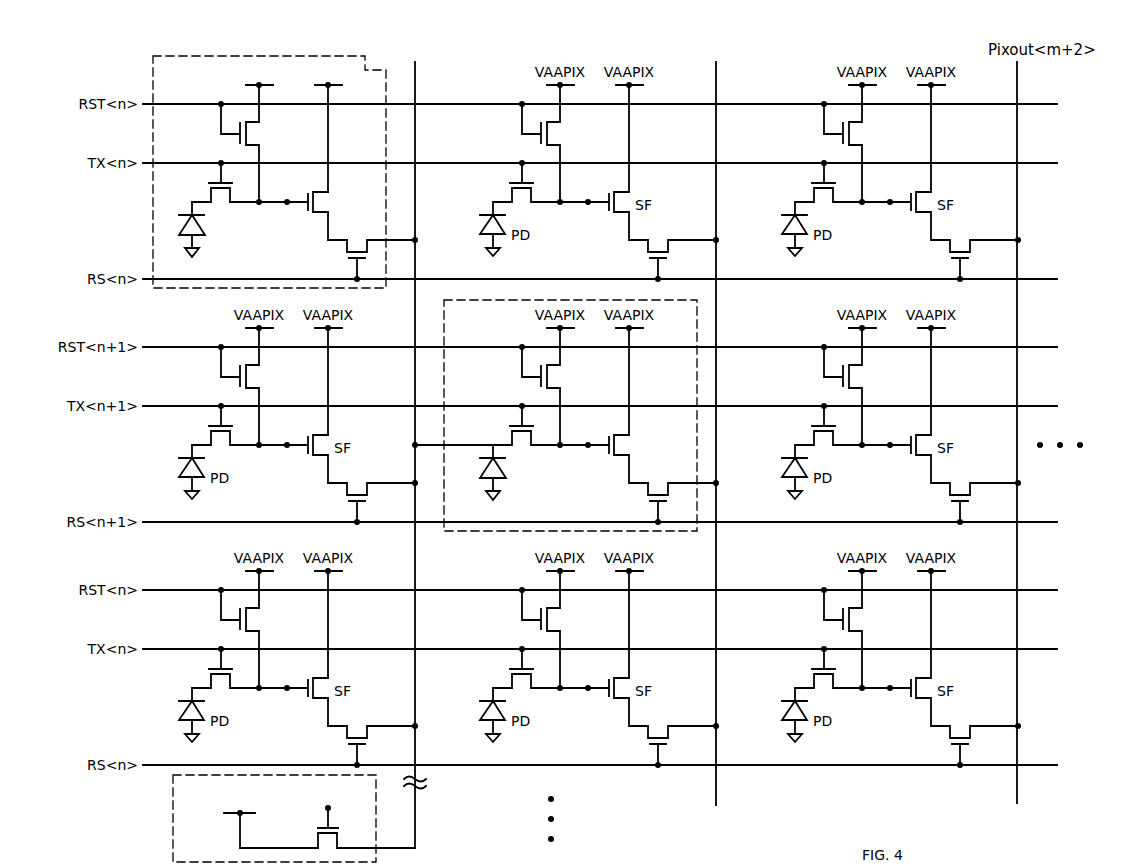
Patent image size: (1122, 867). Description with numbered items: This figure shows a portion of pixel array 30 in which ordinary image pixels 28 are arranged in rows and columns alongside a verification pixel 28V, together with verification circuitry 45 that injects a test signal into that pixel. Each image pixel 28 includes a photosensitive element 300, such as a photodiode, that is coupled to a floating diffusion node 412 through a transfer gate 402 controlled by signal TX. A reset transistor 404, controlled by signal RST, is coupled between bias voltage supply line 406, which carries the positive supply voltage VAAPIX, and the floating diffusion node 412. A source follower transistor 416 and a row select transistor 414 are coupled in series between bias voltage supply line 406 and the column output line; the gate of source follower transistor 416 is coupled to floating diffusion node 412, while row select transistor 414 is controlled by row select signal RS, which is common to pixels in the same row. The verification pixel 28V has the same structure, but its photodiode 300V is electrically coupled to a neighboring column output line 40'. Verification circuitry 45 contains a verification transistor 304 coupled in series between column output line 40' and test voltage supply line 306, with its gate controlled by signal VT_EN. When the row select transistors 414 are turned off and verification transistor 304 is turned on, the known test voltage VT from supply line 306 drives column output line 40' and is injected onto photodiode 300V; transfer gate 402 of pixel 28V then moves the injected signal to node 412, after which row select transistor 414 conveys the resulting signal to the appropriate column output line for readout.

The pixel array 30 is at (98, 55).
The image pixel 28 is at (152, 213).
The photosensitive element 300 is at (178, 224).
The bias voltage supply line 406 is at (278, 99).
The reset transistor 404 is at (409, 265).
The floating diffusion node 412 is at (432, 307).
The transfer gate 402 is at (379, 316).
The source follower transistor 416 is at (463, 341).
The row select transistor 414 is at (505, 381).
The verification pixel 28V is at (493, 532).
The photodiode of verification pixel 300V is at (507, 472).
The column output line 40' is at (419, 444).
The verification circuitry 45 is at (173, 818).
The test voltage supply line 306 is at (238, 826).
The verification transistor 304 is at (317, 839).